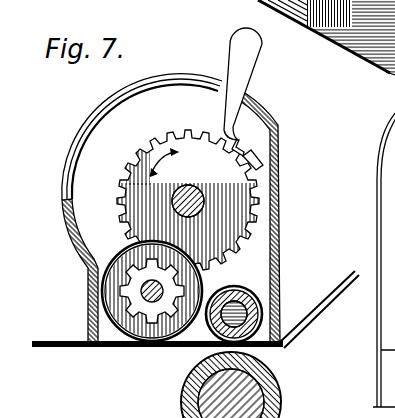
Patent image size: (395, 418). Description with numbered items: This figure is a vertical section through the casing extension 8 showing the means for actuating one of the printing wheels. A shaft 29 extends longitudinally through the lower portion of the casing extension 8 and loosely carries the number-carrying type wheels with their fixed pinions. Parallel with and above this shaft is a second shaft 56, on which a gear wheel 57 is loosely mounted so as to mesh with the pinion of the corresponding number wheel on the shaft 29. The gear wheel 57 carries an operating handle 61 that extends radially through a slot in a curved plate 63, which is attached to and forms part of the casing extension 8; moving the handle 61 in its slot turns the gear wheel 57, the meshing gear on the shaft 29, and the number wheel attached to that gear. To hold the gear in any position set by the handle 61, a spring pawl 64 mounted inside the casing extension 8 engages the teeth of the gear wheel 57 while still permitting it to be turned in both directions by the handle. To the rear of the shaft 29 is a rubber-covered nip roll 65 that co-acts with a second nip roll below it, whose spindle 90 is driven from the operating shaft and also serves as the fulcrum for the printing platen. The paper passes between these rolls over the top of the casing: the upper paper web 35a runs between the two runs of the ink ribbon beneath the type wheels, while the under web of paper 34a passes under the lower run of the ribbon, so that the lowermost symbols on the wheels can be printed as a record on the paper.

The casing extension 8 is at (283, 141).
The shaft 29 is at (150, 291).
The under web of paper 34a is at (97, 350).
The upper paper web 35a is at (62, 341).
The second shaft 56 is at (190, 185).
The gear wheel 57 is at (138, 168).
The operating handle 61 is at (255, 60).
The curved plate 63 is at (100, 107).
The spring pawl 64 is at (250, 151).
The nip roll 65 is at (262, 308).
The spindle 90 is at (252, 404).